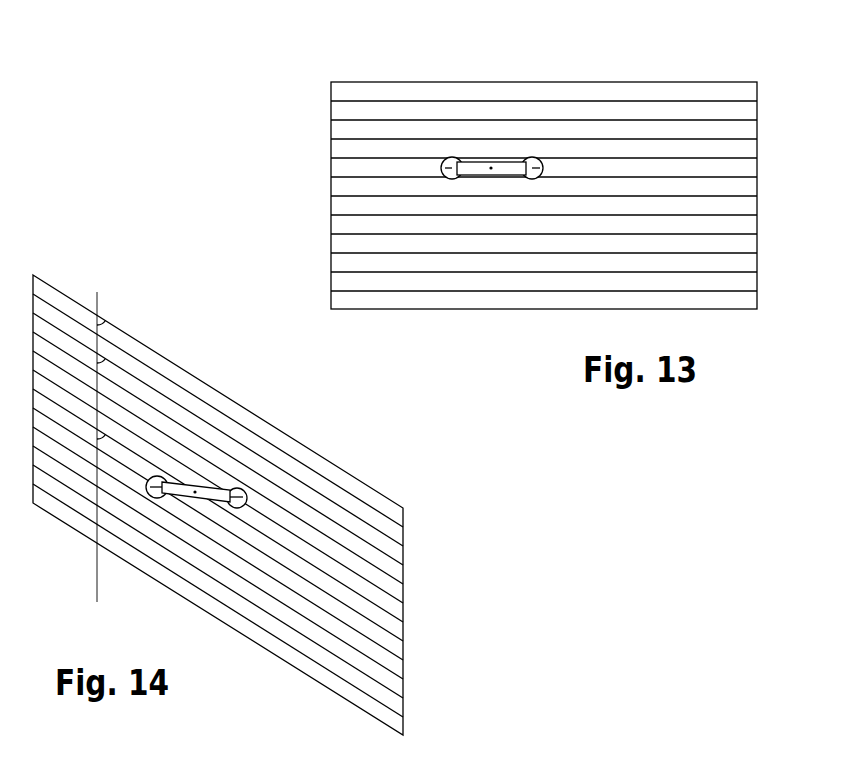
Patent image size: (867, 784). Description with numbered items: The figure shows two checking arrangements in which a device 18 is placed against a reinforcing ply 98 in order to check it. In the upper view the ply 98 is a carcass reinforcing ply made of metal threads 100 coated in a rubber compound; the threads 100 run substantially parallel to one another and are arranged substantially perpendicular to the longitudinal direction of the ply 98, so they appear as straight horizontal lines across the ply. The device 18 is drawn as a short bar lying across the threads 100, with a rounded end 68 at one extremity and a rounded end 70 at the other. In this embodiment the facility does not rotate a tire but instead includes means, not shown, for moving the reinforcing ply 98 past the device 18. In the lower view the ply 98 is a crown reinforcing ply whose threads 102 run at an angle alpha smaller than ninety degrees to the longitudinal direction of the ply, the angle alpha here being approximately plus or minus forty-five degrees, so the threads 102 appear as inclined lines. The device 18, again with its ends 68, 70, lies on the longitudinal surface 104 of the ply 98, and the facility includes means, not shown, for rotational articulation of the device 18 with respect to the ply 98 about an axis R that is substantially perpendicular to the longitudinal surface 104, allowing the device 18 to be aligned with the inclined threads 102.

In FIG. 13, the device 18 is at (498, 140).
In FIG. 14, the device 18 is at (206, 458).
In FIG. 13, the first anchor head 68 is at (450, 163).
In FIG. 14, the first anchor head 68 is at (150, 490).
In FIG. 13, the second anchor head 70 is at (533, 163).
In FIG. 14, the second anchor head 70 is at (258, 496).
In FIG. 13, the reinforcing ply 98 is at (757, 166).
In FIG. 14, the reinforcing ply 98 is at (403, 573).
In FIG. 13, the metal threads 100 is at (678, 82).
In FIG. 14, the threads 102 is at (377, 487).
In FIG. 14, the longitudinal surface 104 is at (349, 600).
In FIG. 14, the angle alpha is at (103, 330).
In FIG. 14, the axis R is at (194, 493).